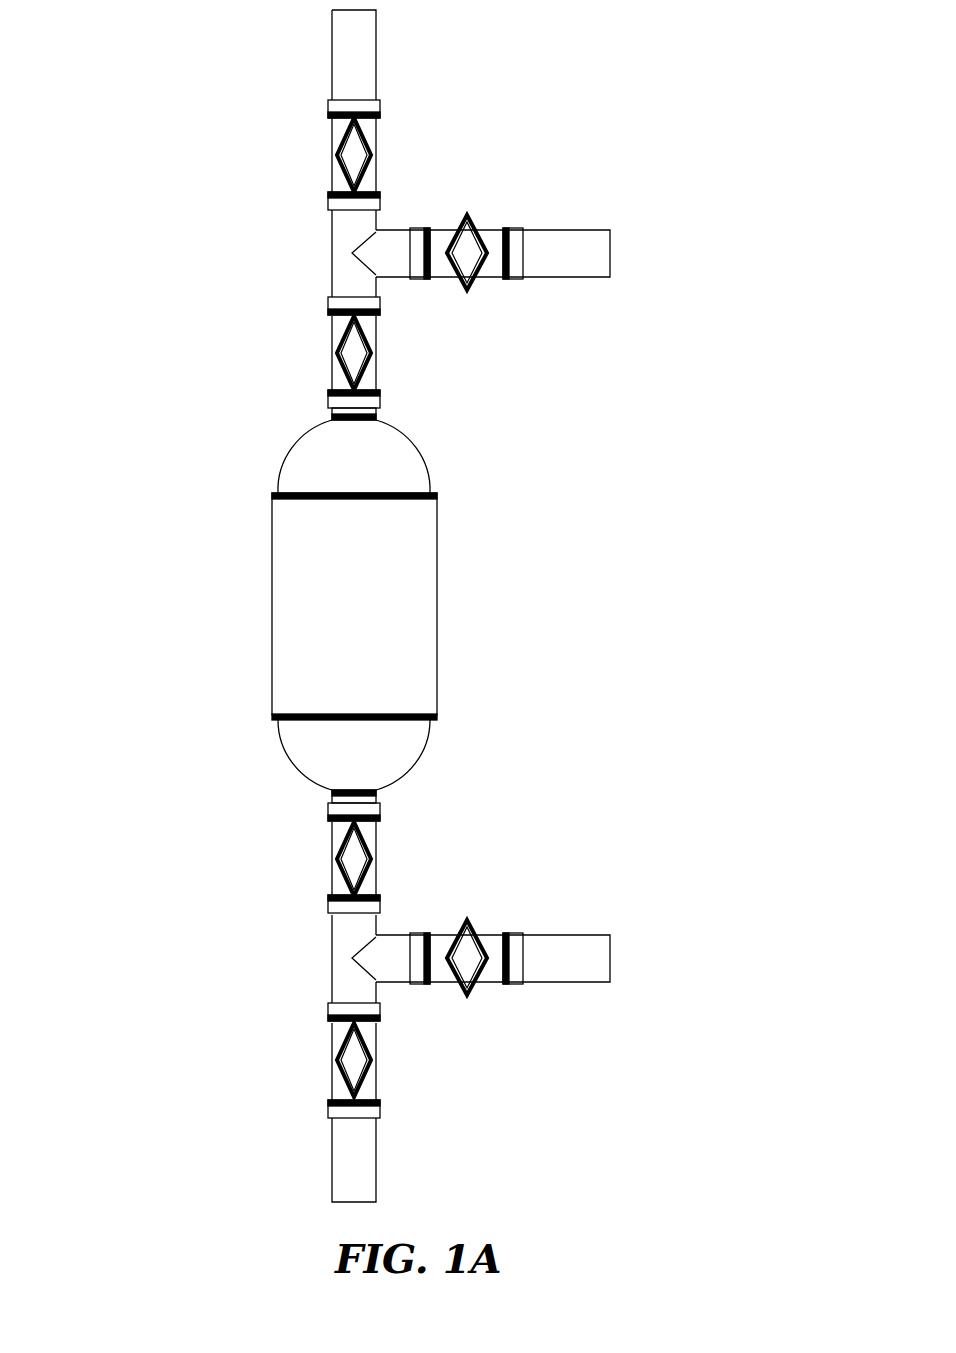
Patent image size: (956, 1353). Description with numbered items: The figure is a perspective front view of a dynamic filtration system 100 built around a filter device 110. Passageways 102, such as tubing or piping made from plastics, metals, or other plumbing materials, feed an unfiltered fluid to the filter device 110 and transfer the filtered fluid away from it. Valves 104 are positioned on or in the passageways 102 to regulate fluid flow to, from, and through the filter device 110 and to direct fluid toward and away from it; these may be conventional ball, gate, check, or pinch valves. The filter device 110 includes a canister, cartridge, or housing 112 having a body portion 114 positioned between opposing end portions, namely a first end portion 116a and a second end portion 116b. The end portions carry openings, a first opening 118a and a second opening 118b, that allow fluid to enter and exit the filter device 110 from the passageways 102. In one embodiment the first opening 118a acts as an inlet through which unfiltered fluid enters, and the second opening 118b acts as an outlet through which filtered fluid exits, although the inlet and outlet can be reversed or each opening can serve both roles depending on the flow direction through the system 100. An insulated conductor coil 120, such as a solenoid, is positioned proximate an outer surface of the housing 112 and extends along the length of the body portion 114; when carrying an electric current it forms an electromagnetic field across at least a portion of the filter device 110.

The dynamic filtration system 100 is at (217, 360).
The passageways 102 is at (376, 48).
The valves 104 is at (365, 160).
The filter device 110 is at (338, 602).
The housing 112 is at (277, 720).
The body portion 114 is at (437, 493).
The first end portion 116a is at (425, 470).
The second end portion 116b is at (417, 762).
The first opening 118a is at (376, 405).
The second opening 118b is at (332, 815).
The insulated conductor coil 120 is at (433, 615).